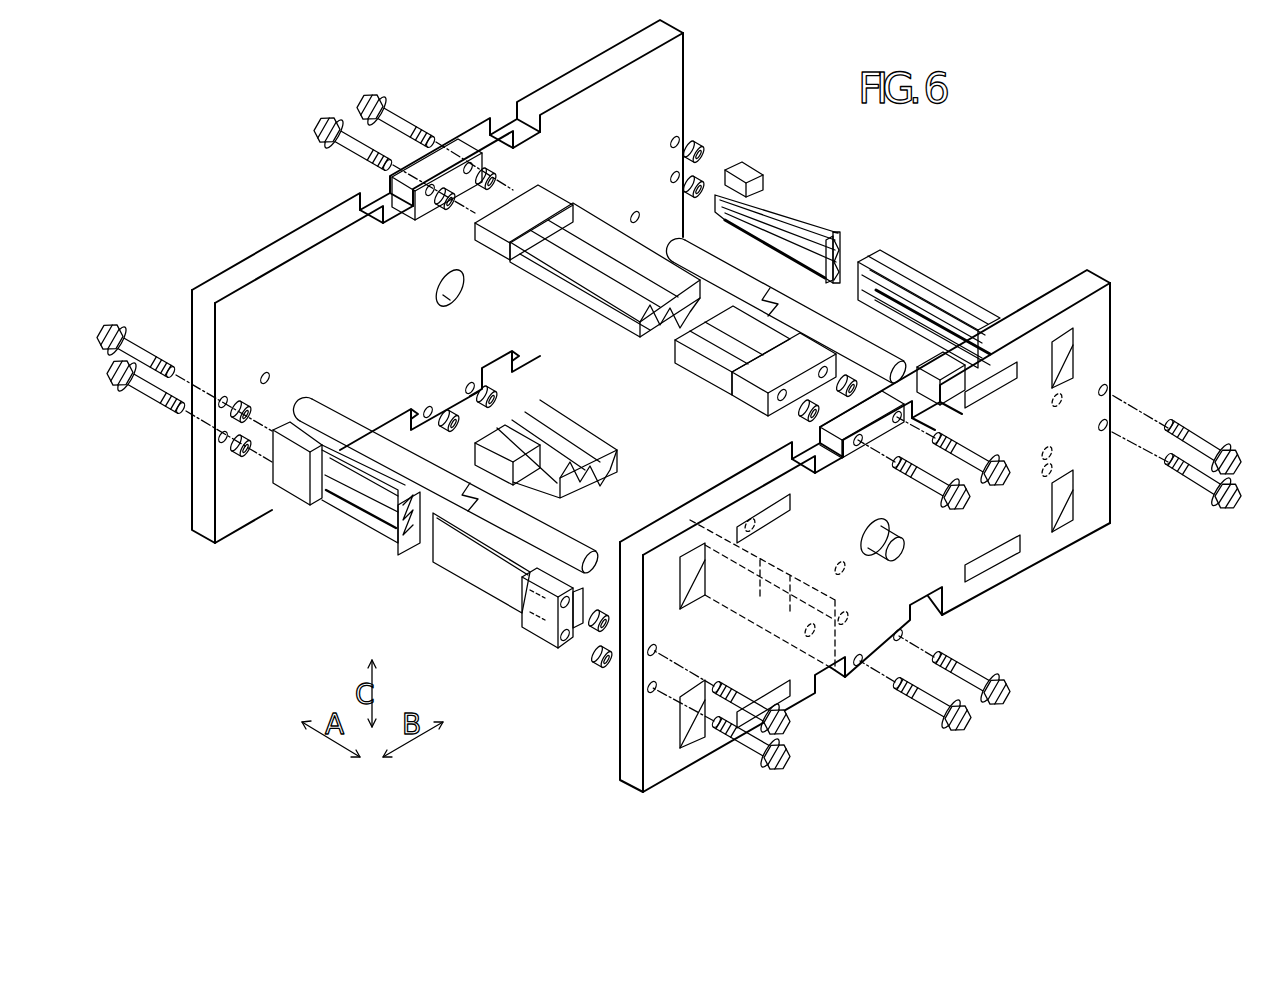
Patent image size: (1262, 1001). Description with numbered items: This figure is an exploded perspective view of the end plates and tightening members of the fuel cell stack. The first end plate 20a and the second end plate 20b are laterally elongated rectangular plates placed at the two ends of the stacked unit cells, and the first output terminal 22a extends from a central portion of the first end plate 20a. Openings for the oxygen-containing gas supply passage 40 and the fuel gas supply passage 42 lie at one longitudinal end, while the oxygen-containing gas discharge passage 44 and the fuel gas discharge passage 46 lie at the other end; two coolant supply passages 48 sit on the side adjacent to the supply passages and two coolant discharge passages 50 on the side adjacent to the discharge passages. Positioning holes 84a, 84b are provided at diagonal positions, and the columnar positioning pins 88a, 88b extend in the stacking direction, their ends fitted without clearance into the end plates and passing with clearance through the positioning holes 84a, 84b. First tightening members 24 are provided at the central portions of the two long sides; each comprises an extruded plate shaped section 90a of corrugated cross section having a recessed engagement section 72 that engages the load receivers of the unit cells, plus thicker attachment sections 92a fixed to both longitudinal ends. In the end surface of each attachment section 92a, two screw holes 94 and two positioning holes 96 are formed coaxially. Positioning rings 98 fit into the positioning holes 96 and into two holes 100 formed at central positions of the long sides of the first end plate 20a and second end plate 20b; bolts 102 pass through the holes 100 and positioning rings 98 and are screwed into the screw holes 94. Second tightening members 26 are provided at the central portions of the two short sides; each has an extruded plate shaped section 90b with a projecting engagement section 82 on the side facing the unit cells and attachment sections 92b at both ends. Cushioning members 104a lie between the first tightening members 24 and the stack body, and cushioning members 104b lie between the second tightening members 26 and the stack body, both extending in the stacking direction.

The first end plate 20a is at (1061, 290).
The second end plate 20b is at (231, 268).
The first output terminal 22a is at (905, 556).
The first tightening member 24 is at (590, 208).
The second tightening member 26 is at (790, 188).
The oxygen-containing gas supply passage 40 is at (1075, 345).
The fuel gas supply passage 42 is at (1064, 532).
The oxygen-containing gas discharge passage 44 is at (690, 728).
The fuel gas discharge passage 46 is at (692, 608).
The coolant supply passage 48 is at (1000, 385).
The coolant discharge passage 50 is at (760, 520).
The recessed engagement section 72 is at (660, 335).
The projecting engagement section 82 is at (845, 258).
The positioning hole 84a is at (635, 212).
The positioning hole 84b is at (267, 372).
The positioning pin 88a is at (745, 280).
The positioning pin 88b is at (362, 427).
The plate shaped section 90a is at (585, 262).
The plate shaped section 90b is at (356, 515).
The attachment section 92a is at (480, 238).
The attachment section 92b is at (725, 168).
The screw hole 94 is at (920, 290).
The positioning hole 96 is at (935, 316).
The positioning ring 98 is at (484, 178).
The hole 100 is at (897, 424).
The bolt 102 is at (358, 100).
The cushioning member 104a is at (576, 460).
The cushioning member 104b is at (822, 245).